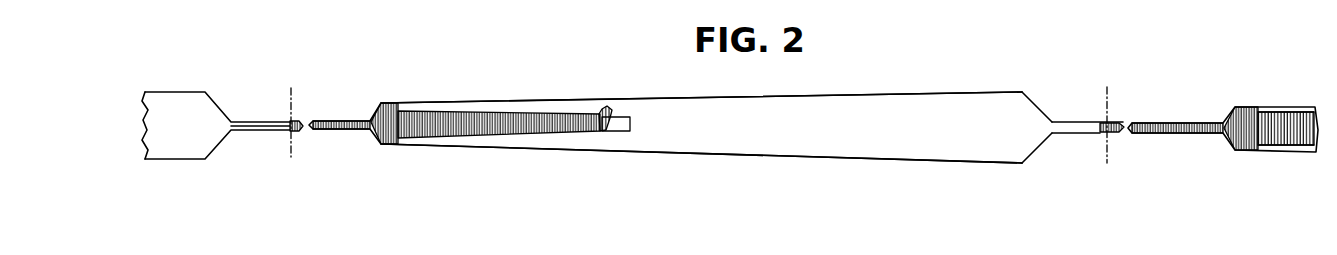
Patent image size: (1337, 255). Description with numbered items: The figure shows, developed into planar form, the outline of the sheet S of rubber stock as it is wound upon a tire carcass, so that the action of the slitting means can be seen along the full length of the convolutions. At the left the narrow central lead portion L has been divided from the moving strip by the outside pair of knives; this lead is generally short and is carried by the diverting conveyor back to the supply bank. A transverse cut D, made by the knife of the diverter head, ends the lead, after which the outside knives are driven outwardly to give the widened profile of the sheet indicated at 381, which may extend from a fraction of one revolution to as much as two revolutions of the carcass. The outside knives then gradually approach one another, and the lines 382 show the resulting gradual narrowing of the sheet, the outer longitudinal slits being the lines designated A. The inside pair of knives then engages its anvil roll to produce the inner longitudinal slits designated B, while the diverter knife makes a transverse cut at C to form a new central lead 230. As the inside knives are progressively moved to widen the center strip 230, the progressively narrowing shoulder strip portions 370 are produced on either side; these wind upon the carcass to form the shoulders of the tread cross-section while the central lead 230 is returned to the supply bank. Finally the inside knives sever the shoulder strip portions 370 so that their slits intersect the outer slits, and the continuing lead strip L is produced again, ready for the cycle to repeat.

The shoulder strip portions 370 is at (455, 108).
The inside longitudinal slits B is at (505, 110).
The central lead 230 is at (601, 108).
The transverse cut C is at (631, 122).
The sheet S is at (871, 137).
The narrowing lines 382 is at (832, 94).
The outside longitudinal slits A is at (945, 93).
The widened profile 381 is at (1030, 101).
The central lead portion L is at (250, 127).
The transverse cut D is at (286, 128).